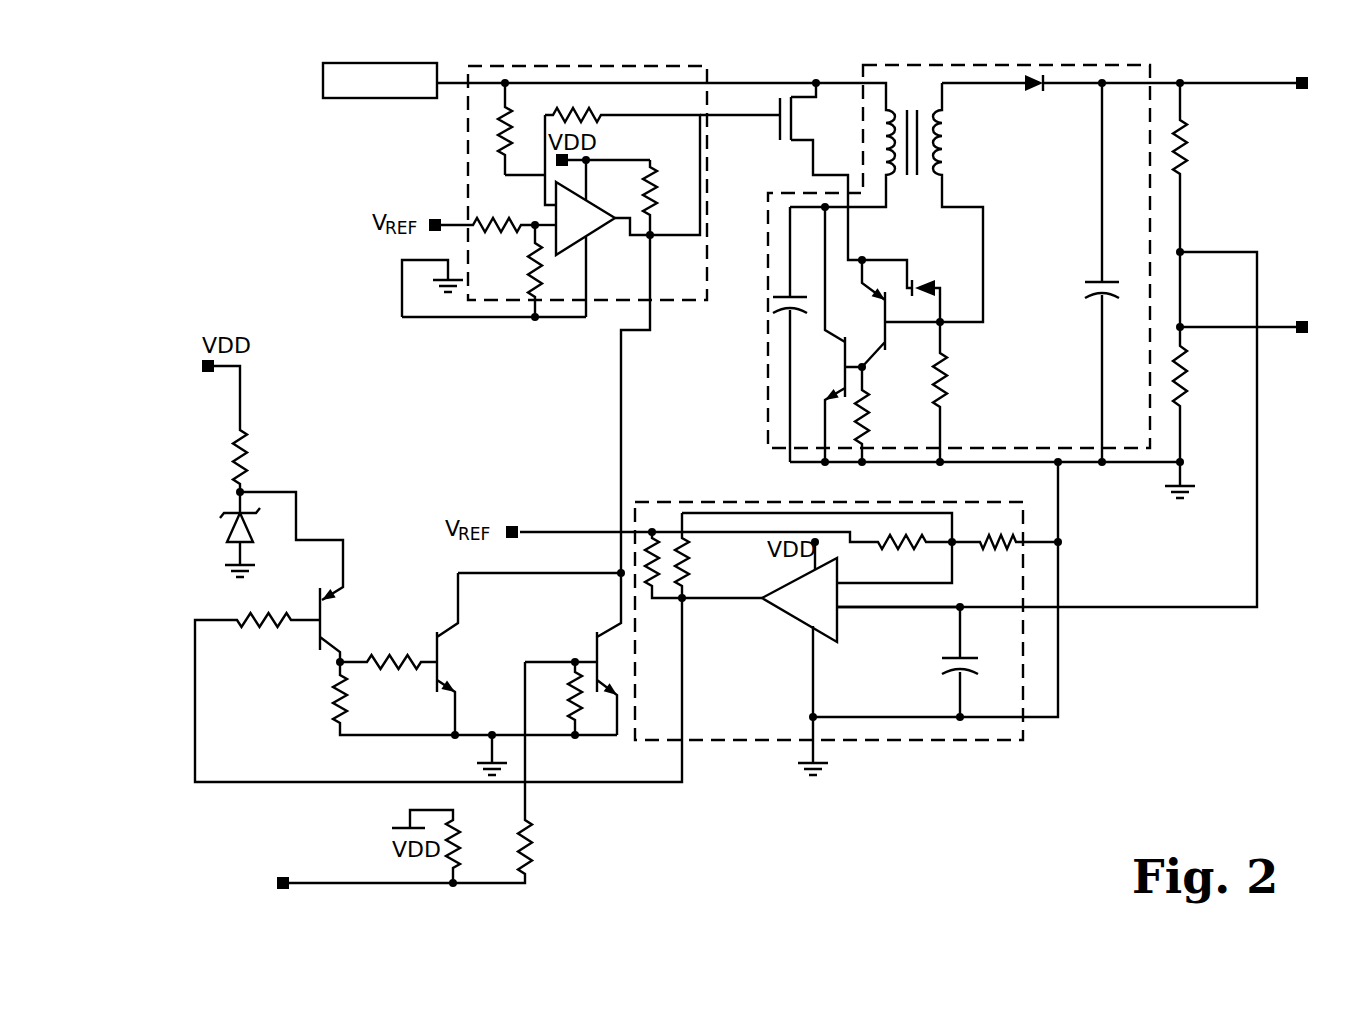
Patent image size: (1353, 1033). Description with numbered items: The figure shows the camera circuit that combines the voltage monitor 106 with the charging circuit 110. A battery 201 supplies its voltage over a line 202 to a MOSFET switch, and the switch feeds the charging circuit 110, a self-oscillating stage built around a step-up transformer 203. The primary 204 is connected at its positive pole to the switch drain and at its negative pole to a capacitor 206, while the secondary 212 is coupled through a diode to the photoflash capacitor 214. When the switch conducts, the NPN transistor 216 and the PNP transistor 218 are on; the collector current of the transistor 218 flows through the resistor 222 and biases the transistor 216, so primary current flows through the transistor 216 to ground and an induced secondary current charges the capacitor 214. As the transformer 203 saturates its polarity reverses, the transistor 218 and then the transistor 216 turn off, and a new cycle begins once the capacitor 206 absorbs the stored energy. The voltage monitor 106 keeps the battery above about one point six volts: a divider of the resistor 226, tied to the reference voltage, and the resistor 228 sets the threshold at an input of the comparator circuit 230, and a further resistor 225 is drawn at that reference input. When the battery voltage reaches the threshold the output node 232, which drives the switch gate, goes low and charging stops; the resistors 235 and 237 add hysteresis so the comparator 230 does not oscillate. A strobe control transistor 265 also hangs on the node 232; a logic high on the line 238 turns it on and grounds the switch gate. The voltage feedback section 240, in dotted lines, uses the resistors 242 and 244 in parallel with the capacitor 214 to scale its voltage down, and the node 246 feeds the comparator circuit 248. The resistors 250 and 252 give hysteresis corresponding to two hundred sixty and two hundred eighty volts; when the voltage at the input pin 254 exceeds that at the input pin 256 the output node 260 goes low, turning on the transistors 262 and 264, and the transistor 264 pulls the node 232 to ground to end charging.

The voltage monitor 106 is at (603, 303).
The charging circuit 110 is at (1152, 177).
The battery 201 is at (340, 100).
The line 202 is at (462, 88).
The step-up transformer 203 is at (886, 195).
The primary 204 is at (893, 107).
The capacitor 206 is at (802, 296).
The secondary 212 is at (945, 123).
The photoflash capacitor 214 is at (1096, 293).
The NPN transistor 216 is at (862, 375).
The PNP transistor 218 is at (886, 337).
The resistor 222 is at (867, 417).
The resistor 225 is at (535, 220).
The resistor 226 is at (522, 228).
The resistor 228 is at (527, 283).
The comparator circuit 230 is at (598, 230).
The output node 232 is at (657, 240).
The resistor 235 is at (600, 108).
The resistor 237 is at (537, 112).
The line 238 is at (303, 882).
The voltage feedback section 240 is at (913, 743).
The resistor 242 is at (1191, 150).
The resistor 244 is at (1182, 373).
The node 246 is at (1182, 253).
The comparator circuit 248 is at (827, 640).
The resistor 250 is at (893, 547).
The resistor 252 is at (987, 552).
The input pin 254 is at (842, 610).
The input pin 256 is at (855, 583).
The output node 260 is at (688, 597).
The transistor 262 is at (318, 637).
The transistor 264 is at (453, 638).
The transistor 265 is at (593, 648).